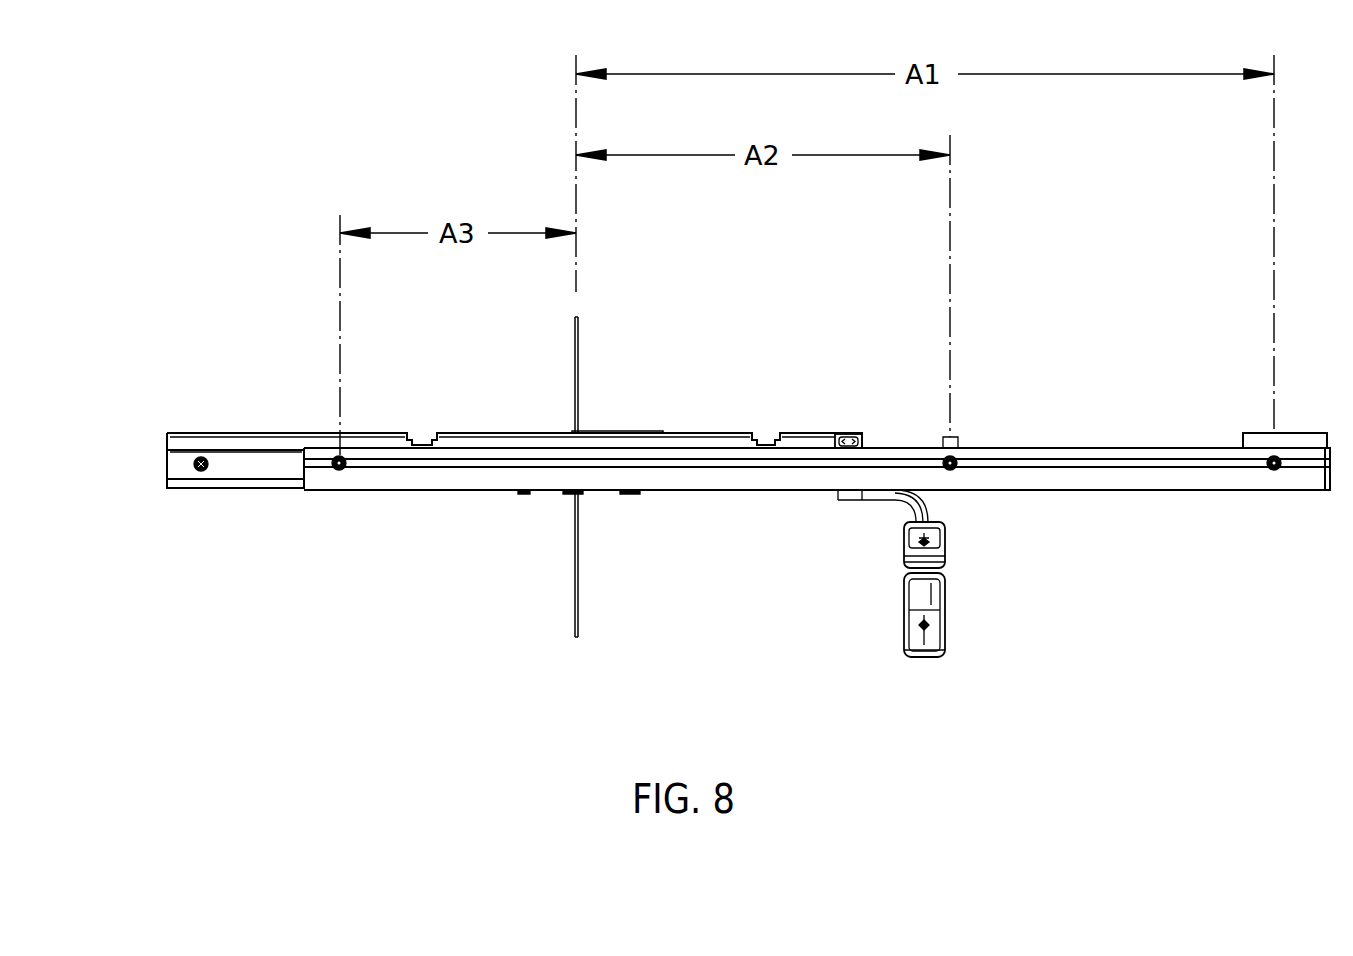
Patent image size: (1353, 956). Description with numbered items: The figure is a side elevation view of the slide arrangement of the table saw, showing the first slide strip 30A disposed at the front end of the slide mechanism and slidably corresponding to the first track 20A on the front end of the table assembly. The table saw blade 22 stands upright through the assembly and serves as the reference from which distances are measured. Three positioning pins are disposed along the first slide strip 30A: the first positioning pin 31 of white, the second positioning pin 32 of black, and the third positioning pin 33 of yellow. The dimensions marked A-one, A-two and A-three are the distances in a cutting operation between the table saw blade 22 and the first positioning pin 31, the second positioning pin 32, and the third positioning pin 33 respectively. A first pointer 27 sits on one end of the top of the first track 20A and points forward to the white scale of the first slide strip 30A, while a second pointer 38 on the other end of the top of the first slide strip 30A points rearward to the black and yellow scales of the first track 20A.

The first track 20A is at (193, 442).
The first slide strip 30A is at (490, 480).
The table saw blade 22 is at (578, 383).
The first pointer 27 is at (853, 432).
The second pointer 38 is at (567, 447).
The third positioning pin 33 is at (338, 471).
The second positioning pin 32 is at (957, 467).
The first positioning pin 31 is at (1262, 471).